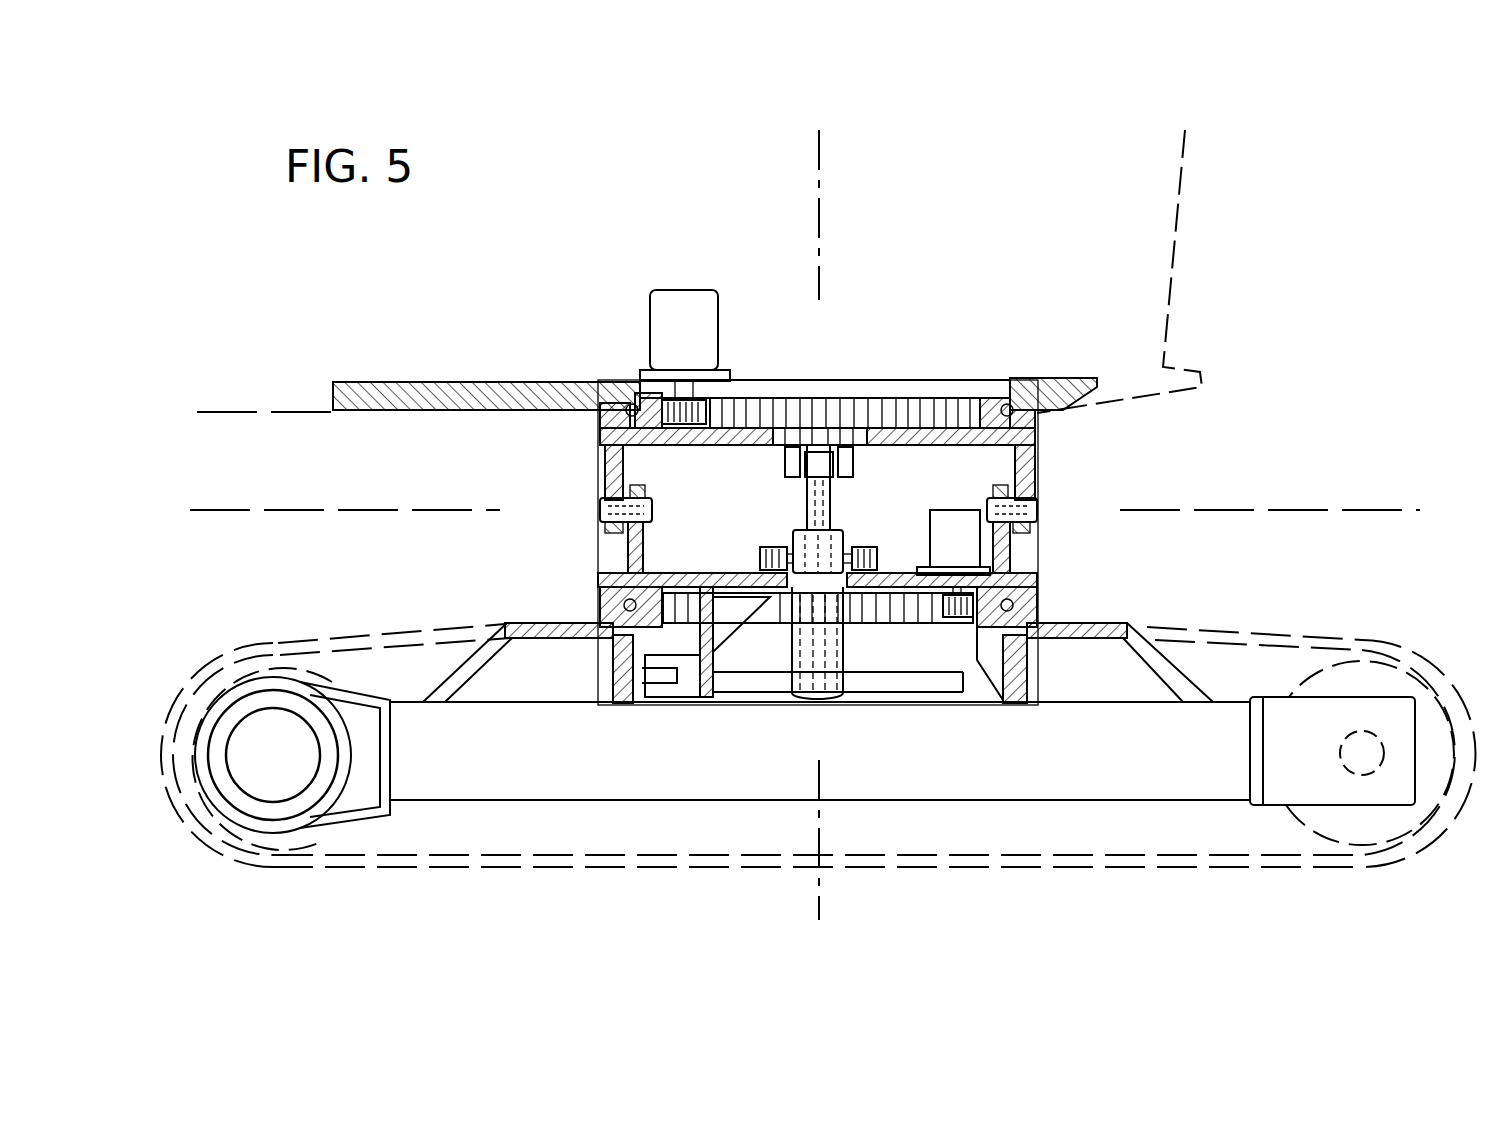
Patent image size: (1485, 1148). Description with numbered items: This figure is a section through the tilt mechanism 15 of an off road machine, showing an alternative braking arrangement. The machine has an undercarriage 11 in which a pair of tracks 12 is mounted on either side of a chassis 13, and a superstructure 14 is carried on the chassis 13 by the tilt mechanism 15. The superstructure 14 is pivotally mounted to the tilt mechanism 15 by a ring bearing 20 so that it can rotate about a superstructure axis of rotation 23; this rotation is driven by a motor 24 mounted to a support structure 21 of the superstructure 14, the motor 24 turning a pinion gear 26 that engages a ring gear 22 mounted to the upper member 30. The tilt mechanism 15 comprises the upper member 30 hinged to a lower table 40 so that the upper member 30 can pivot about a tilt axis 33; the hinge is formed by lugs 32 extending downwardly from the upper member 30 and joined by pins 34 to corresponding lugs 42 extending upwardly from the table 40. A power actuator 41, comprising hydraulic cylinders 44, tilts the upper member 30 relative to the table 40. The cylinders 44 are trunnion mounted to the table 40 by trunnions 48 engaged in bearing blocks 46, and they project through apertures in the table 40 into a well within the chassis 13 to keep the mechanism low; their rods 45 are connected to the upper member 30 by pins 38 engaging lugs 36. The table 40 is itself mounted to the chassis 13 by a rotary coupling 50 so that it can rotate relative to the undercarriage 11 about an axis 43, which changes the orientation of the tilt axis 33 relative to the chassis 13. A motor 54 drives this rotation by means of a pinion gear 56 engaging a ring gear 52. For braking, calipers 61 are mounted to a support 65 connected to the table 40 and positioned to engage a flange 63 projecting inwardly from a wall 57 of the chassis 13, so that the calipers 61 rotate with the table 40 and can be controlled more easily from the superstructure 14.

The undercarriage 11 is at (375, 600).
The tracks 12 is at (335, 640).
The chassis 13 is at (520, 622).
The superstructure 14 is at (1183, 207).
The tilt mechanism 15 is at (585, 473).
The ring bearing 20 is at (997, 388).
The support structure 21 is at (483, 378).
The ring gear 22 is at (855, 412).
The superstructure axis of rotation 23 is at (815, 225).
The motor 24 is at (673, 283).
The pinion gear 26 is at (705, 415).
The upper member 30 is at (1040, 437).
The lugs 32 is at (1037, 468).
The tilt axis 33 is at (313, 510).
The pins 34 is at (603, 507).
The lugs 36 is at (783, 478).
The pins 38 is at (785, 462).
The table 40 is at (1037, 578).
The power actuator 41 is at (840, 535).
The lugs 42 is at (1012, 548).
The axis 43 is at (822, 830).
The hydraulic cylinders 44 is at (828, 693).
The rods 45 is at (832, 500).
The bearing blocks 46 is at (768, 548).
The trunnions 48 is at (760, 558).
The rotary coupling 50 is at (1037, 602).
The ring gear 52 is at (913, 612).
The motor 54 is at (968, 510).
The pinion gear 56 is at (965, 610).
The wall 57 is at (1032, 672).
The calipers 61 is at (668, 700).
The flange 63 is at (988, 690).
The support 65 is at (718, 695).